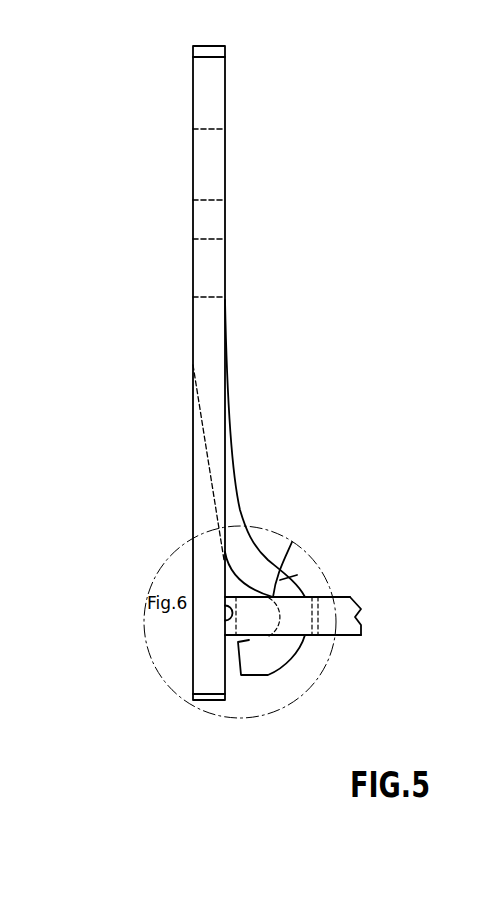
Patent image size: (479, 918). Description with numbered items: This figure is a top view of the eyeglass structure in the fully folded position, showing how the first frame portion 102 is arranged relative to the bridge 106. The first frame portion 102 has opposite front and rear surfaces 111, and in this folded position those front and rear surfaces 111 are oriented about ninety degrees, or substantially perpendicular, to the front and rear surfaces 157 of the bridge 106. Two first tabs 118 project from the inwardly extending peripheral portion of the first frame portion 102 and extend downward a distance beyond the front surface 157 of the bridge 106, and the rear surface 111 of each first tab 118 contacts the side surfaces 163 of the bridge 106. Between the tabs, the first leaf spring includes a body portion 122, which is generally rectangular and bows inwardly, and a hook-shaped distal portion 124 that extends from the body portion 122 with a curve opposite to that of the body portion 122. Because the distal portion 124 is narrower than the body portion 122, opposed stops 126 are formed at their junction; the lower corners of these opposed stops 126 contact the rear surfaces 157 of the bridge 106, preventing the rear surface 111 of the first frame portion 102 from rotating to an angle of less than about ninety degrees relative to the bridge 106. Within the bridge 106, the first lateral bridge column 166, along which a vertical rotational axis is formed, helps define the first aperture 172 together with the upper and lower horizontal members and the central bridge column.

The first frame portion 102 is at (177, 331).
The bridge 106 is at (385, 616).
The front and rear surfaces 111 is at (239, 276).
The first tabs 118 is at (207, 603).
The body portion 122 is at (247, 560).
The distal portion 124 is at (285, 652).
The opposed stops 126 is at (292, 542).
The front and rear surfaces 157 is at (345, 586).
The side surfaces 163 is at (225, 617).
The first lateral bridge column 166 is at (252, 617).
The first aperture 172 is at (258, 640).